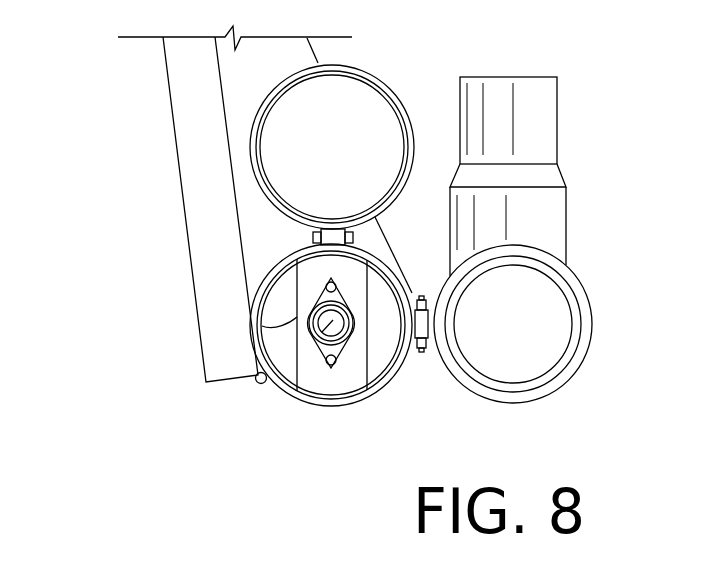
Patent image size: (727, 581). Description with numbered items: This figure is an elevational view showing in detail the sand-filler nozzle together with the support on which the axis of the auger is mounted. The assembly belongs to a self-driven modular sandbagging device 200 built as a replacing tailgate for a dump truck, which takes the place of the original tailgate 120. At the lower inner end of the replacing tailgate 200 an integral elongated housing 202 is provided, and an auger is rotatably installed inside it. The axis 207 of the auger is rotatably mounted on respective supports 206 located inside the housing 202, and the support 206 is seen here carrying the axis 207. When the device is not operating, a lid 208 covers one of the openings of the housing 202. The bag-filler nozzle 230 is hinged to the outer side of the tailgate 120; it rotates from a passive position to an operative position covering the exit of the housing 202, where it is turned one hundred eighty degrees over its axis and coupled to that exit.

The tailgate 120 is at (191, 78).
The replacing tailgate 200 is at (275, 385).
The integral elongated housing 202 is at (375, 332).
The support 206 is at (330, 262).
The axis of the auger 207 is at (315, 337).
The lid 208 is at (347, 113).
The bag-filler nozzle 230 is at (550, 212).